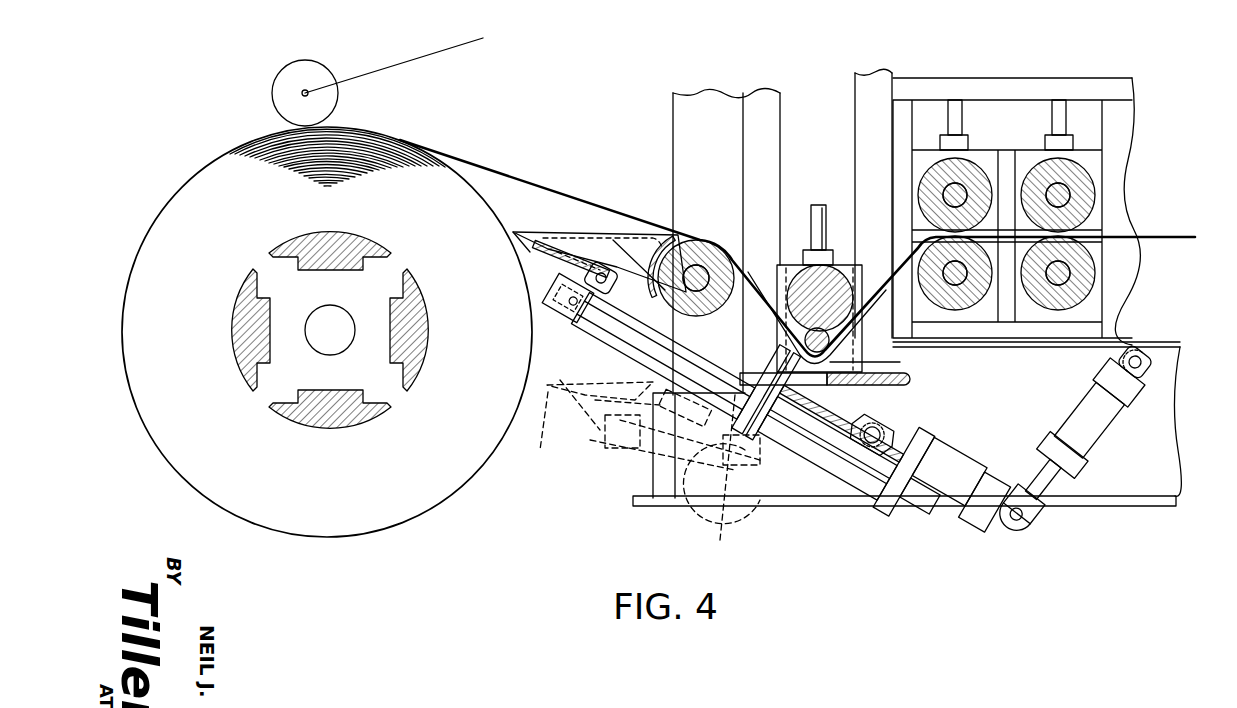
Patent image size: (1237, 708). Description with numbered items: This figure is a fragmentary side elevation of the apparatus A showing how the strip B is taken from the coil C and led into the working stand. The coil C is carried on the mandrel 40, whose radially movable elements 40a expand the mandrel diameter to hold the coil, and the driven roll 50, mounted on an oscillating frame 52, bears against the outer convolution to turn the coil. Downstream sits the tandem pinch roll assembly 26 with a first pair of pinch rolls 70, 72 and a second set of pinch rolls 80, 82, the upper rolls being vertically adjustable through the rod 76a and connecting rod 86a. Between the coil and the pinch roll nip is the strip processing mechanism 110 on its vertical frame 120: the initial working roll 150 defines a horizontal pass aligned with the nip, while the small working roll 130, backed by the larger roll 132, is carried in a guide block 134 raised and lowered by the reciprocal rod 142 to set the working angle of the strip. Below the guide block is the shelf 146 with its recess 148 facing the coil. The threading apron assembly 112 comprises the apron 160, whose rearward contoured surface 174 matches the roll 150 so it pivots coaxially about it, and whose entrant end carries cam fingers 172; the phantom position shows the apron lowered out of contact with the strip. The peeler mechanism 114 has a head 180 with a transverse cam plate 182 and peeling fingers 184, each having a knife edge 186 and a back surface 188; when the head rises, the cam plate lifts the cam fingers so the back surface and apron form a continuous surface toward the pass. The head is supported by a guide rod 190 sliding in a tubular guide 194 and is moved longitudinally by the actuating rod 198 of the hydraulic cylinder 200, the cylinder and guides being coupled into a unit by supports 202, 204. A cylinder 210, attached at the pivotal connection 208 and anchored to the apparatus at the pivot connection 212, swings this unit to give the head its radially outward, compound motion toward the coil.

The coil C is at (483, 488).
The mandrel 40 is at (398, 352).
The radially movable elements 40a is at (296, 418).
The driven roll 50 is at (339, 96).
The frame 52 is at (410, 58).
The strip B is at (1158, 237).
The apparatus A is at (733, 88).
The strip processing mechanism 110 is at (810, 105).
The vertical frame 120 is at (882, 72).
The tandem pinch roll assembly 26 is at (1092, 130).
The rod 76a is at (960, 110).
The connecting rod 86a is at (1065, 110).
The pinch roll 70 is at (972, 178).
The pinch roll 80 is at (1092, 182).
The pinch roll 72 is at (975, 296).
The pinch roll 82 is at (1086, 290).
The rearward contoured surface 174 is at (688, 256).
The actuating rod 198 is at (705, 304).
The initial working roll 150 is at (690, 237).
The back-up roll 132 is at (795, 288).
The guide block 134 is at (848, 270).
The reciprocal rod 142 is at (824, 208).
The working roll 130 is at (832, 353).
The shelf 146 is at (900, 376).
The recess 148 is at (840, 378).
The threading apron assembly 112 is at (607, 230).
The cam plate 182 is at (540, 242).
The peeling fingers 184 is at (528, 236).
The cam fingers 172 is at (562, 242).
The back surface 188 is at (622, 243).
The apron 160 is at (640, 232).
The knife edge 186 is at (520, 245).
The head 180 is at (546, 288).
The guide rod 190 is at (596, 292).
The peeler mechanism 114 is at (580, 320).
The hydraulic cylinder 200 is at (862, 412).
The tubular guide 194 is at (886, 498).
The support 204 is at (912, 440).
The support 202 is at (888, 420).
The pivot connection 212 is at (1145, 363).
The cylinder 210 is at (1102, 400).
The pivotal connection 208 is at (1020, 522).